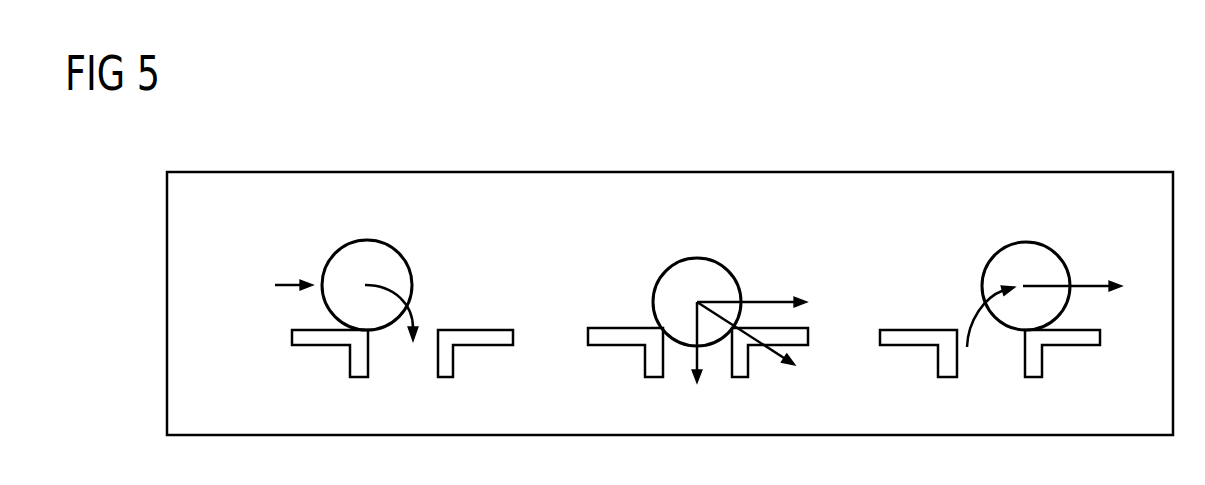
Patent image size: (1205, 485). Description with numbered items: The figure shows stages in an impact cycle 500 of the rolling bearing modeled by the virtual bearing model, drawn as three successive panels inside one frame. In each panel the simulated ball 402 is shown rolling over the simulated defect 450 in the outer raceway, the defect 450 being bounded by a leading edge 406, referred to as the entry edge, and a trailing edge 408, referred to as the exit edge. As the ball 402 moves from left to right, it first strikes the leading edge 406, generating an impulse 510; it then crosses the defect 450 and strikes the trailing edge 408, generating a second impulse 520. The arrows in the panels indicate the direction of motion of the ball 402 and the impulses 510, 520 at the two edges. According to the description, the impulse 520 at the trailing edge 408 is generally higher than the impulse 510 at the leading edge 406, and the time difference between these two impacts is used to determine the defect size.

The impact cycle 500 is at (862, 173).
The simulated ball 402 is at (398, 250).
The leading edge 406 is at (622, 359).
The trailing edge 408 is at (797, 397).
The simulated defect 450 is at (697, 361).
The impulse 510 is at (957, 330).
The impulse 520 is at (440, 330).